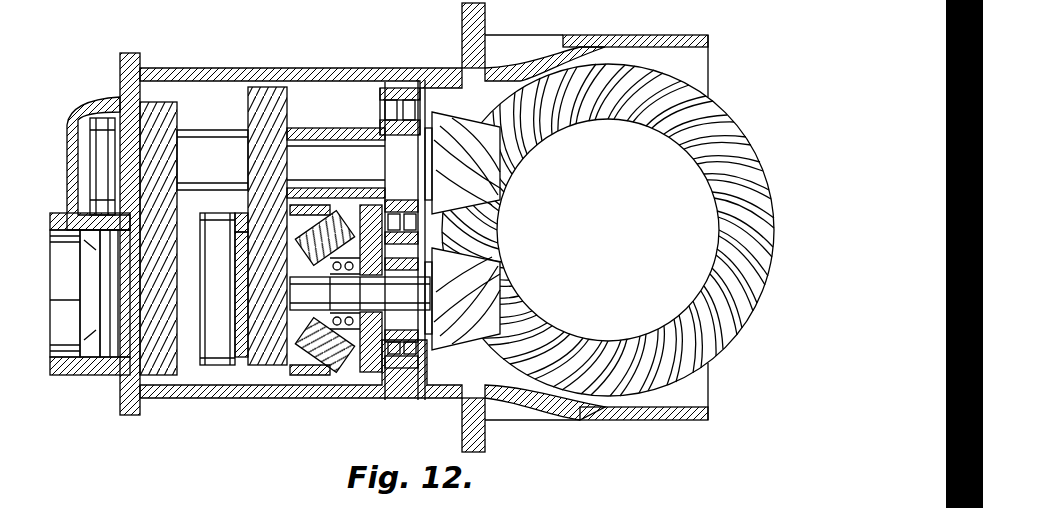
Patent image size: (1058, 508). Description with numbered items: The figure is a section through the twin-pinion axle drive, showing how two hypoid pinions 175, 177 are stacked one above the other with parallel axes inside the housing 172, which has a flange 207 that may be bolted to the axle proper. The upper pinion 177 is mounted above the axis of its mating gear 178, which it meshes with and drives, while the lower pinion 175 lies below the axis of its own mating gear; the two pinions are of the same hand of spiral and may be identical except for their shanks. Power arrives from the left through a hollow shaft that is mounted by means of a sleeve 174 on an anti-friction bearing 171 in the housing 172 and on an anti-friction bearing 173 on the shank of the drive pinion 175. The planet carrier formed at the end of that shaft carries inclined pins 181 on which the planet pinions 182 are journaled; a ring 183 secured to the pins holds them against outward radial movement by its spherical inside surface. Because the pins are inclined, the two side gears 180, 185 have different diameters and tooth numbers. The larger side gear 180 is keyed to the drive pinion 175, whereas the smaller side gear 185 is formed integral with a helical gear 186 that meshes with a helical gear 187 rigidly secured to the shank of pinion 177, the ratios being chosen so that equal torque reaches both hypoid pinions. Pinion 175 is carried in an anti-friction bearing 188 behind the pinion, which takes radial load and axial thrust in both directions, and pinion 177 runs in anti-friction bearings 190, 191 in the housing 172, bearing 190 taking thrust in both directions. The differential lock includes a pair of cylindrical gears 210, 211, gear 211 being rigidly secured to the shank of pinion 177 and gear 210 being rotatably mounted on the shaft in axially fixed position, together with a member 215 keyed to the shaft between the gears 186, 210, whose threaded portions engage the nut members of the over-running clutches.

The anti-friction bearing 171 is at (110, 362).
The housing 172 is at (136, 416).
The anti-friction bearing 173 is at (354, 358).
The sleeve 174 is at (74, 360).
The hypoid pinion 175 is at (486, 270).
The hypoid pinion 177 is at (496, 181).
The gear 178 is at (735, 152).
The side gear 180 is at (368, 240).
The upper pinion gear 181 is at (292, 357).
The planet pinion 182 is at (342, 352).
The ring 183 is at (301, 352).
The side gear 185 is at (284, 352).
The helical gear 186 is at (242, 370).
The helical gear 187 is at (283, 113).
The anti-friction bearing 188 is at (412, 362).
The anti-friction bearing 190 is at (396, 98).
The anti-friction bearing 191 is at (112, 135).
The flange 207 is at (481, 18).
The cylindrical gear 210 is at (160, 377).
The cylindrical gear 211 is at (166, 114).
The member 215 is at (201, 382).